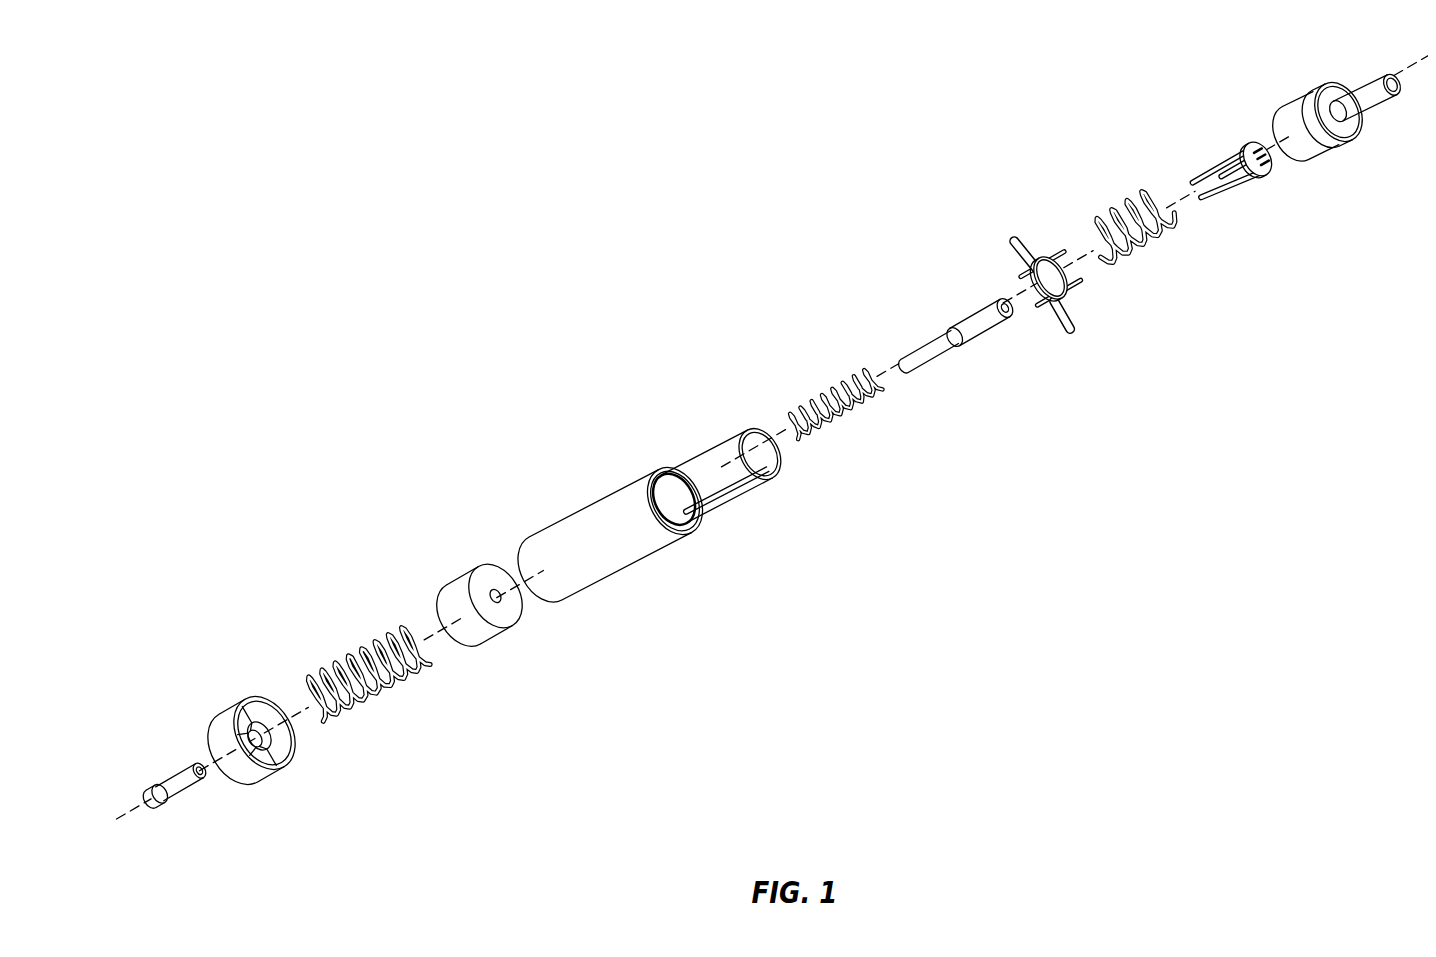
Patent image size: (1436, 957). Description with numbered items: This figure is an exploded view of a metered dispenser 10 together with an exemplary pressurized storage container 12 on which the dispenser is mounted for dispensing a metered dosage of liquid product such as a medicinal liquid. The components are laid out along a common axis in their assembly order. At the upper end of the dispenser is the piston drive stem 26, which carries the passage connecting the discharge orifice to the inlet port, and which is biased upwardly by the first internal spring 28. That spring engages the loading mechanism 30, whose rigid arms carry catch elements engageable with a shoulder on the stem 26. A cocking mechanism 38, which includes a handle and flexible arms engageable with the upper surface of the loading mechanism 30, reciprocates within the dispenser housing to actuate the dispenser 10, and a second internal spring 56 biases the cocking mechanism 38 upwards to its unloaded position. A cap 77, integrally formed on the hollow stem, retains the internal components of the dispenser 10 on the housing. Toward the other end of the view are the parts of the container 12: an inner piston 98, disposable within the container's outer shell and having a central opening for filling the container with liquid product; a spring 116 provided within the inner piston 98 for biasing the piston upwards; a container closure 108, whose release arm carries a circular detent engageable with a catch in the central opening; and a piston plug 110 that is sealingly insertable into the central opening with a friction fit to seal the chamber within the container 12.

The metered dispenser 10 is at (594, 259).
The pressurized storage container 12 is at (627, 479).
The piston drive stem 26 is at (953, 326).
The first internal spring 28 is at (827, 396).
The loading mechanism 30 is at (1252, 142).
The cocking mechanism 38 is at (1020, 240).
The second internal spring 56 is at (1137, 197).
The cap 77 is at (1323, 92).
The inner piston 98 is at (463, 574).
The container closure 108 is at (233, 701).
The piston plug 110 is at (177, 771).
The spring 116 is at (347, 651).